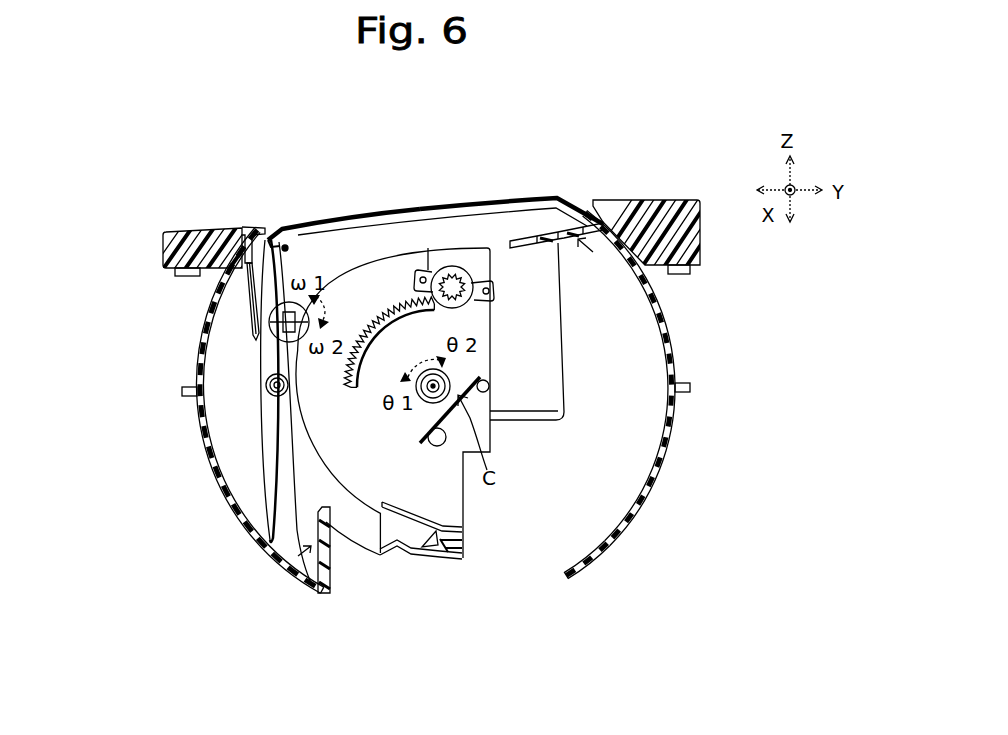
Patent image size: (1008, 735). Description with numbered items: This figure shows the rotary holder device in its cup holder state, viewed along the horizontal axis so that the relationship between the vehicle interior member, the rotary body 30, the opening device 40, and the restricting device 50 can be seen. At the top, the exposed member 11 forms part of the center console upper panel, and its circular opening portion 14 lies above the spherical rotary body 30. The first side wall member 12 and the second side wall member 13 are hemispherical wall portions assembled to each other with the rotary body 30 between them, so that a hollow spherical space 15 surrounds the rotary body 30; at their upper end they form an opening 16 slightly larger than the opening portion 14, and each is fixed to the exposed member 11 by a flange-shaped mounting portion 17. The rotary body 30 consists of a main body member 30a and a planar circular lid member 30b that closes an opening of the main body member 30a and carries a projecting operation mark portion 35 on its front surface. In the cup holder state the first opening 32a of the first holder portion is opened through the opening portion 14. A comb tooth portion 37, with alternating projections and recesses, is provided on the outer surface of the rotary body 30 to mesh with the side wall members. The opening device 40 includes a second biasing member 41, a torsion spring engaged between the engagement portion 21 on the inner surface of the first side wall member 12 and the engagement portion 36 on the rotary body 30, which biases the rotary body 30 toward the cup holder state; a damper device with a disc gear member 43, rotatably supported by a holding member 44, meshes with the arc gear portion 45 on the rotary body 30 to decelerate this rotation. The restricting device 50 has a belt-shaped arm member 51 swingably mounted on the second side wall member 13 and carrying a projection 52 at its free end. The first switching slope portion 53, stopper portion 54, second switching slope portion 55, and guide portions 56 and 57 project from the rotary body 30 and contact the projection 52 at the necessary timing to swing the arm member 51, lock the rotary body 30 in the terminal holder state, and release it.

The exposed member 11 is at (192, 232).
The side wall member 12 is at (665, 437).
The side wall member 13 is at (258, 533).
The opening portion 14 is at (270, 235).
The hollow spherical space 15 is at (573, 542).
The opening 16 is at (586, 208).
The mounting portion 17 is at (183, 390).
The engagement portion 21 is at (490, 387).
The rotary body 30 is at (427, 178).
The main body member 30a is at (316, 248).
The lid member 30b is at (270, 487).
The first opening 32a is at (382, 212).
The operation mark portion 35 is at (258, 297).
The engagement portion 36 is at (466, 487).
The comb tooth portion 37 is at (593, 252).
The opening device 40 is at (494, 404).
The second biasing member 41 is at (523, 419).
The disc gear member 43 is at (452, 266).
The holding member 44 is at (494, 300).
The arc gear portion 45 is at (370, 300).
The restricting device 50 is at (265, 428).
The arm member 51 is at (268, 335).
The projection 52 is at (264, 393).
The first switching slope portion 53 is at (368, 540).
The stopper portion 54 is at (441, 560).
The second switching slope portion 55 is at (440, 544).
The guide portion 56 is at (464, 524).
The guide portion 57 is at (407, 558).